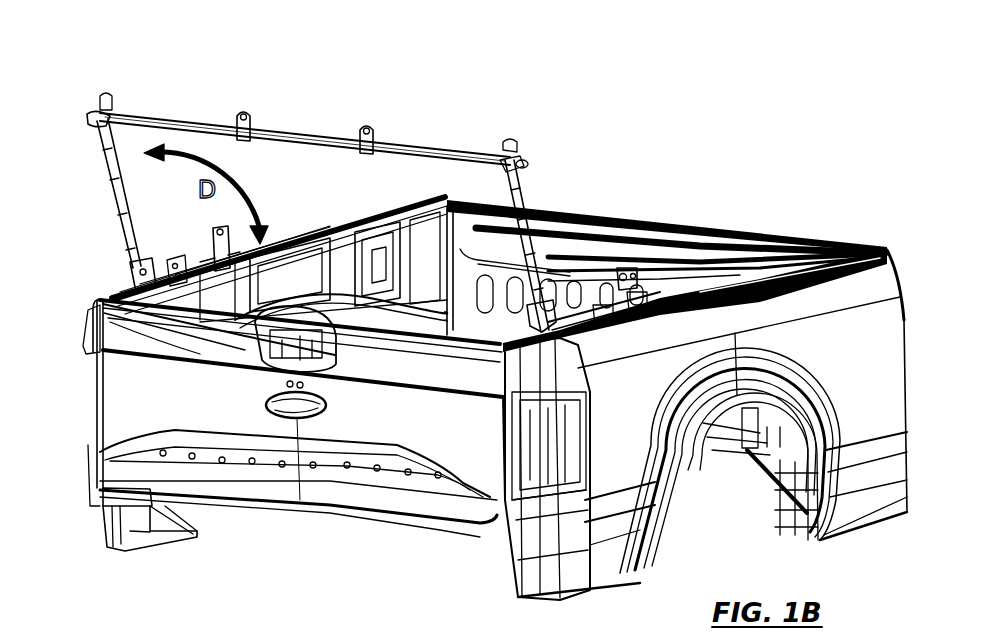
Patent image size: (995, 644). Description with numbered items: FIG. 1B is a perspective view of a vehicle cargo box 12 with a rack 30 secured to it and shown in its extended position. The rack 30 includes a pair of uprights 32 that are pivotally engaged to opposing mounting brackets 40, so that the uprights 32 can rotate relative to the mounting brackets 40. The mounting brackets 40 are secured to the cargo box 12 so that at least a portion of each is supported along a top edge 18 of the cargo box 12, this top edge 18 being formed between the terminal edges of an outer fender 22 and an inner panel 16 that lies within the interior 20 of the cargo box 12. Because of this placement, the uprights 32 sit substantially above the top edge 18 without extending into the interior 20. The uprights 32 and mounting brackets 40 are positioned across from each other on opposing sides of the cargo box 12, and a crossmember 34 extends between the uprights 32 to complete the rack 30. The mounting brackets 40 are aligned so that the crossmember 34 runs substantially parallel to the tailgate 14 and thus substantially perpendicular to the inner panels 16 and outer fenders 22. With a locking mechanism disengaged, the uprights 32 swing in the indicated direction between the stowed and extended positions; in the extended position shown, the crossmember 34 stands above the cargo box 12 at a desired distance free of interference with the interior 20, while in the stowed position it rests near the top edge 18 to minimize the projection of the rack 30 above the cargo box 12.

The cargo box 12 is at (727, 216).
The tailgate 14 is at (130, 387).
The inner panel 16 is at (310, 272).
The top edge 18 is at (366, 218).
The interior 20 is at (565, 256).
The outer fender 22 is at (857, 350).
The rack 30 is at (188, 111).
The uprights 32 is at (110, 196).
The crossmember 34 is at (343, 142).
The mounting brackets 40 is at (190, 263).